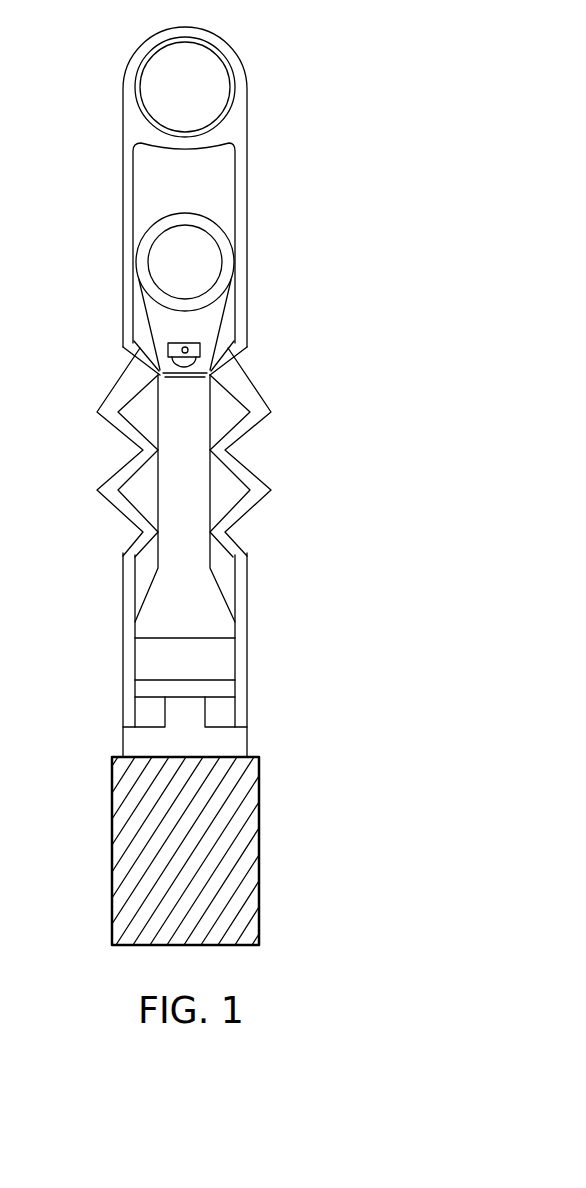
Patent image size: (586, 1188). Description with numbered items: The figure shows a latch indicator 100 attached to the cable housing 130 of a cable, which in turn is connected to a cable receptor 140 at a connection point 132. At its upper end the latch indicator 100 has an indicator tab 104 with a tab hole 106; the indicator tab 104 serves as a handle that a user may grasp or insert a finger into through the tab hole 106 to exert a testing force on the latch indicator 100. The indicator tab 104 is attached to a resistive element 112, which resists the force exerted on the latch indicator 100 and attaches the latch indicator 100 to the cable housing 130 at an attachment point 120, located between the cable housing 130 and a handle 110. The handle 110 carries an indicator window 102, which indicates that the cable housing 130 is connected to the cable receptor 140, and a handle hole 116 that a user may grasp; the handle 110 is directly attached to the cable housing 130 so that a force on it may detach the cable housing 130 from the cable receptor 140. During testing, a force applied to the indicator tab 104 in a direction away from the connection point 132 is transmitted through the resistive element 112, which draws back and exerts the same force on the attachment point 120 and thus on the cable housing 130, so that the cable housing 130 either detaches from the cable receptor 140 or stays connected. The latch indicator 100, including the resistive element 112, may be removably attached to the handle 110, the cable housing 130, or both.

The latch indicator 100 is at (337, 32).
The indicator window 102 is at (213, 369).
The indicator tab 104 is at (247, 127).
The tab hole 106 is at (208, 72).
The handle 110 is at (202, 482).
The resistive element 112 is at (232, 540).
The handle hole 116 is at (202, 262).
The attachment point 120 is at (228, 690).
The cable housing 130 is at (230, 742).
The connection point 132 is at (167, 755).
The cable receptor 140 is at (250, 832).